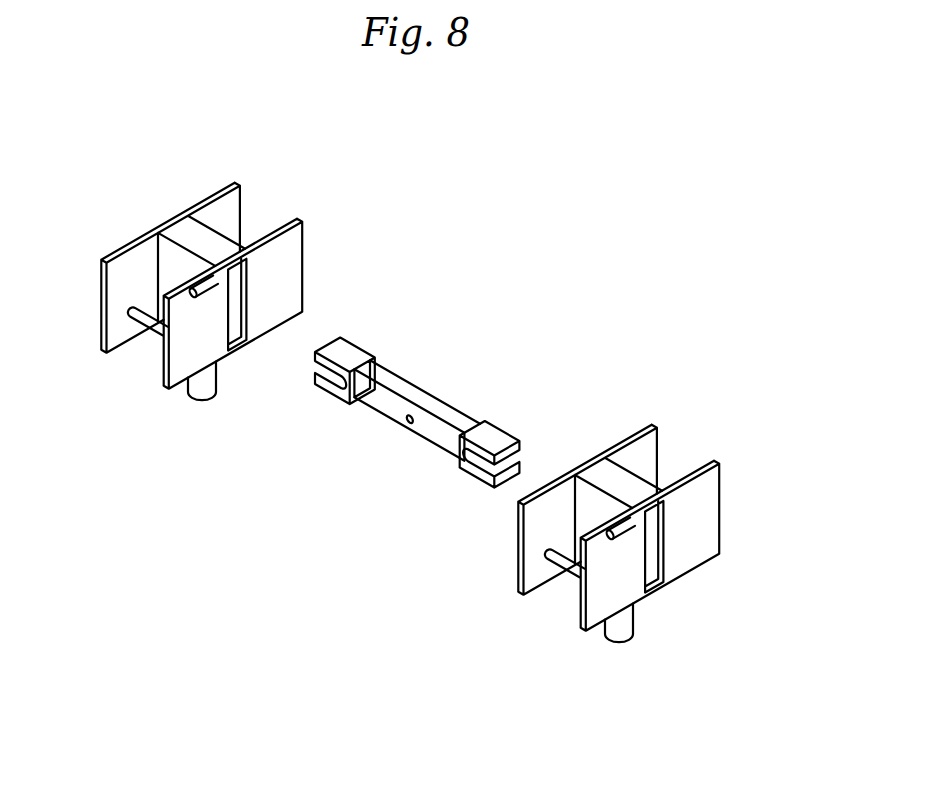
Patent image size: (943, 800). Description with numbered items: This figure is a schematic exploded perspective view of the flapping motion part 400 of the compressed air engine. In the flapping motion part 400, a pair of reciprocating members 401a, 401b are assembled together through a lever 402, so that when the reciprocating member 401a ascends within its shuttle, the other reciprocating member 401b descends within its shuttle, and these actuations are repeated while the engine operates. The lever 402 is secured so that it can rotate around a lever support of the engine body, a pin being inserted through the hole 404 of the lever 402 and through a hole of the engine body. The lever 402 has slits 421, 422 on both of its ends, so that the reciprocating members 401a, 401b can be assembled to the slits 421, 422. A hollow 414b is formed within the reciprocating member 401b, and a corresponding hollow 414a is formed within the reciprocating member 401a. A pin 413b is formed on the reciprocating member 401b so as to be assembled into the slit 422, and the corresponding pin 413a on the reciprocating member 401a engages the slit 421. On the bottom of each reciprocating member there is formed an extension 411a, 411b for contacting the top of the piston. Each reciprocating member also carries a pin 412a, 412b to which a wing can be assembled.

The flapping motion part 400 is at (592, 236).
The reciprocating member 401a is at (203, 198).
The reciprocating member 401b is at (567, 473).
The lever 402 is at (410, 382).
The hole 404 is at (405, 420).
The extension 411a is at (200, 400).
The extension 411b is at (615, 635).
The pin 412a is at (131, 328).
The pin 412b is at (550, 565).
The pin 413a is at (207, 282).
The pin 413b is at (630, 513).
The hollow 414a is at (247, 278).
The hollow 414b is at (662, 533).
The slit 421 is at (330, 373).
The slit 422 is at (482, 460).